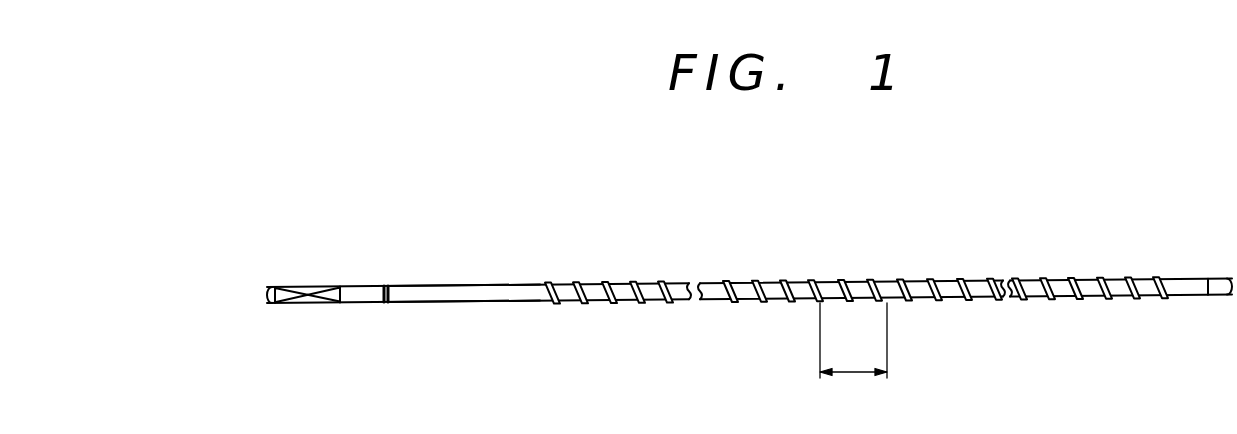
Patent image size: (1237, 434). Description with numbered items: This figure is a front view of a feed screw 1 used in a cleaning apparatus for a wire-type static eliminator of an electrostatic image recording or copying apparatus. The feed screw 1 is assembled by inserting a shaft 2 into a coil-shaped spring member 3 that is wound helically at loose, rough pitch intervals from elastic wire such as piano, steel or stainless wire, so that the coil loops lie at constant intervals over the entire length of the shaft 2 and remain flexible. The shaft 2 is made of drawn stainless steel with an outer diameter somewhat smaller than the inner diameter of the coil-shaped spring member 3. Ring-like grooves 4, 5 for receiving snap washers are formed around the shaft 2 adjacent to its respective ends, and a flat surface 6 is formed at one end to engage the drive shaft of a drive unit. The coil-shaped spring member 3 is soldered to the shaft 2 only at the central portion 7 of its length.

The feed screw 1 is at (489, 224).
The shaft 2 is at (490, 290).
The coil-shaped spring member 3 is at (658, 283).
The ring-like groove 4 is at (388, 286).
The ring-like groove 5 is at (1203, 278).
The flat surface 6 is at (307, 286).
The central portion 7 is at (850, 372).